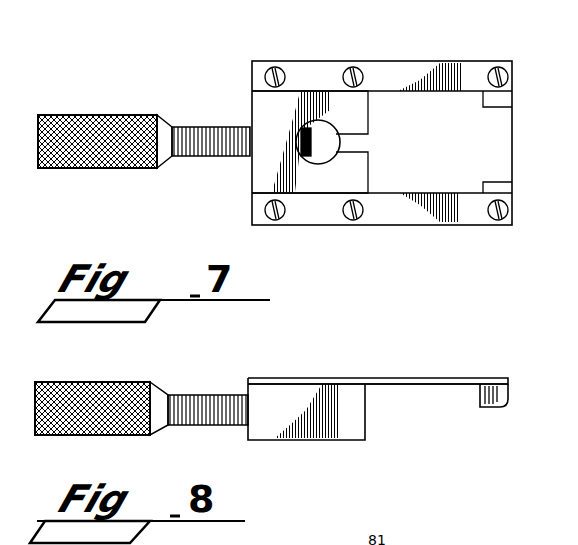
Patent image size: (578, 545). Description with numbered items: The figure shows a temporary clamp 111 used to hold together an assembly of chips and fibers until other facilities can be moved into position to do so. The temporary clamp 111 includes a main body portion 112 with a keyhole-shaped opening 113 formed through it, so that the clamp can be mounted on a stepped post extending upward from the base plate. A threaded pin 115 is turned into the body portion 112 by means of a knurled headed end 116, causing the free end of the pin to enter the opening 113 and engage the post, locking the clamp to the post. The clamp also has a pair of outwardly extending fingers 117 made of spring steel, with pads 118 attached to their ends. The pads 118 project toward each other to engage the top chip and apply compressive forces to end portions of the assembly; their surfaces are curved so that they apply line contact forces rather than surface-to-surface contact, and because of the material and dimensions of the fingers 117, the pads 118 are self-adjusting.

In FIG. 7, the temporary clamp 111 is at (356, 237).
In FIG. 8, the temporary clamp 111 is at (336, 360).
In FIG. 7, the main body portion 112 is at (262, 104).
In FIG. 8, the main body portion 112 is at (268, 428).
In FIG. 7, the keyhole-shaped opening 113 is at (333, 137).
In FIG. 7, the threaded pin 115 is at (226, 158).
In FIG. 8, the threaded pin 115 is at (196, 402).
In FIG. 7, the knurled headed end 116 is at (97, 116).
In FIG. 8, the knurled headed end 116 is at (98, 383).
In FIG. 7, the outwardly extending fingers 117 is at (452, 66).
In FIG. 8, the outwardly extending fingers 117 is at (418, 380).
In FIG. 7, the pads 118 is at (500, 107).
In FIG. 8, the pads 118 is at (483, 390).